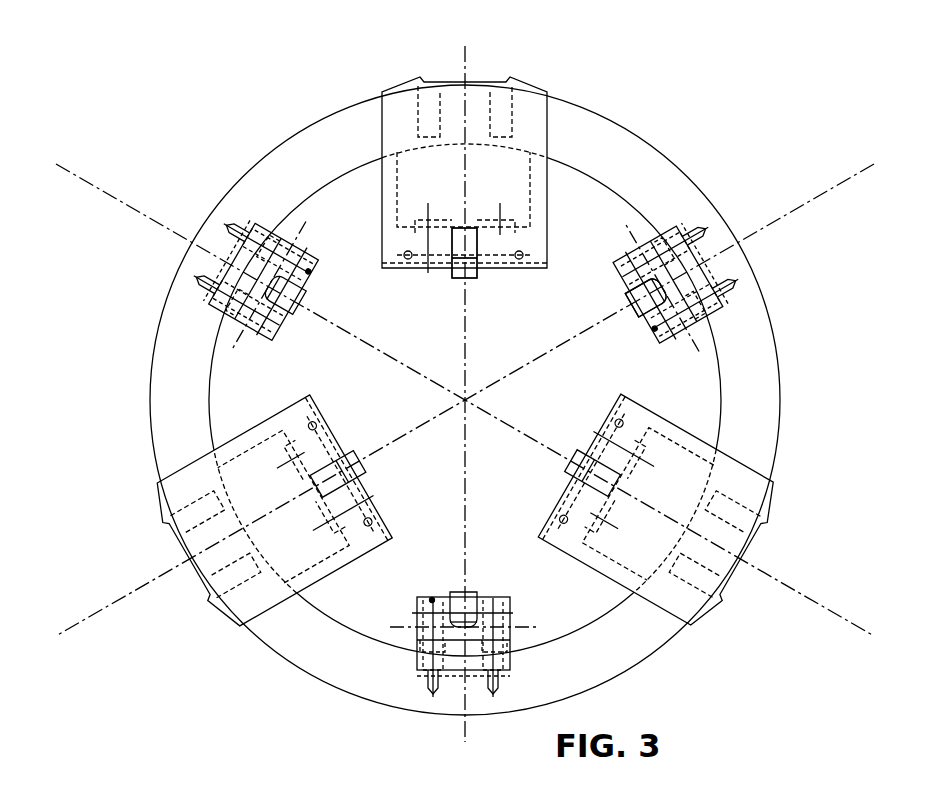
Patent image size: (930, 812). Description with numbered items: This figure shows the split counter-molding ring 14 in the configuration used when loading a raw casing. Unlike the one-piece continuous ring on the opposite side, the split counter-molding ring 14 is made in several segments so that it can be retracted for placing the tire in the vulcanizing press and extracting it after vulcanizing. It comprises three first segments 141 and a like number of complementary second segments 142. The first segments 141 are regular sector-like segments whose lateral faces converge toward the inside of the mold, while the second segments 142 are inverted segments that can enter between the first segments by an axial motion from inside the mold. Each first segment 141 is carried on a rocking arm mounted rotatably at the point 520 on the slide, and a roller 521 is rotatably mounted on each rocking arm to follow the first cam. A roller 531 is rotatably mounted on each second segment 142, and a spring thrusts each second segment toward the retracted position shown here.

The split counter-molding ring 14 is at (245, 108).
The first segments 141 is at (617, 142).
The second segments 142 is at (480, 97).
The roller 531 is at (470, 283).
The point 520 is at (635, 230).
The roller 521 is at (633, 316).